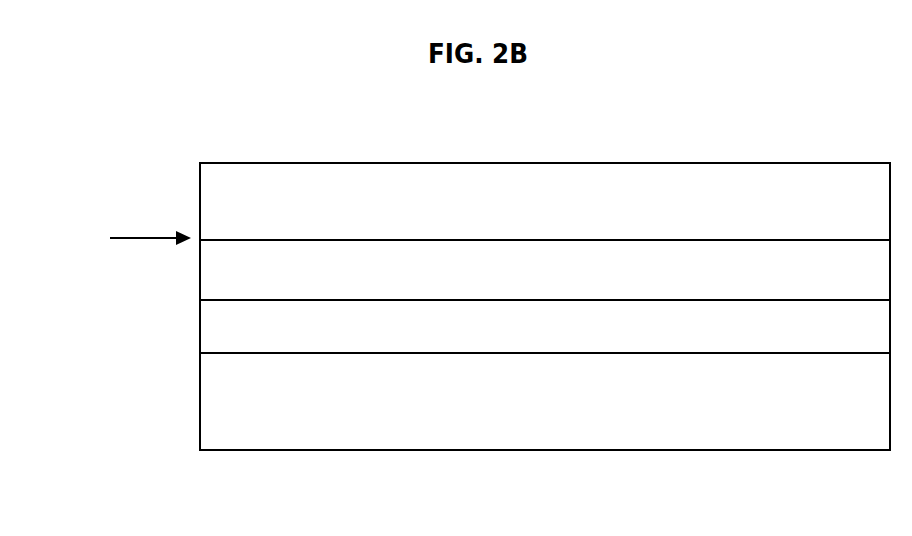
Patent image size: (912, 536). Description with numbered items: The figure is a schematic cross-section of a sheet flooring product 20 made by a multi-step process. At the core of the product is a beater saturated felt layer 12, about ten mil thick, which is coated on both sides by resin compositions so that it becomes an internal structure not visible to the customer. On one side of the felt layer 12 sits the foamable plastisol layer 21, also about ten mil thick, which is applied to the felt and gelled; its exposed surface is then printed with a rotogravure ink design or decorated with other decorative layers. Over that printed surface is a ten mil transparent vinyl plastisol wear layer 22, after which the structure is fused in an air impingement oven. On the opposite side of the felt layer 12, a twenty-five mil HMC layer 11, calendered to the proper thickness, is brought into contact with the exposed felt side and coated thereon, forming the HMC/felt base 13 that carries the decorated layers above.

The sheet flooring product 20 is at (263, 112).
The transparent vinyl plastisol wear layer 22 is at (312, 165).
The foamable plastisol layer 21 is at (215, 265).
The HMC/felt base 13 is at (195, 302).
The felt layer 12 is at (250, 332).
The HMC layer 11 is at (390, 413).